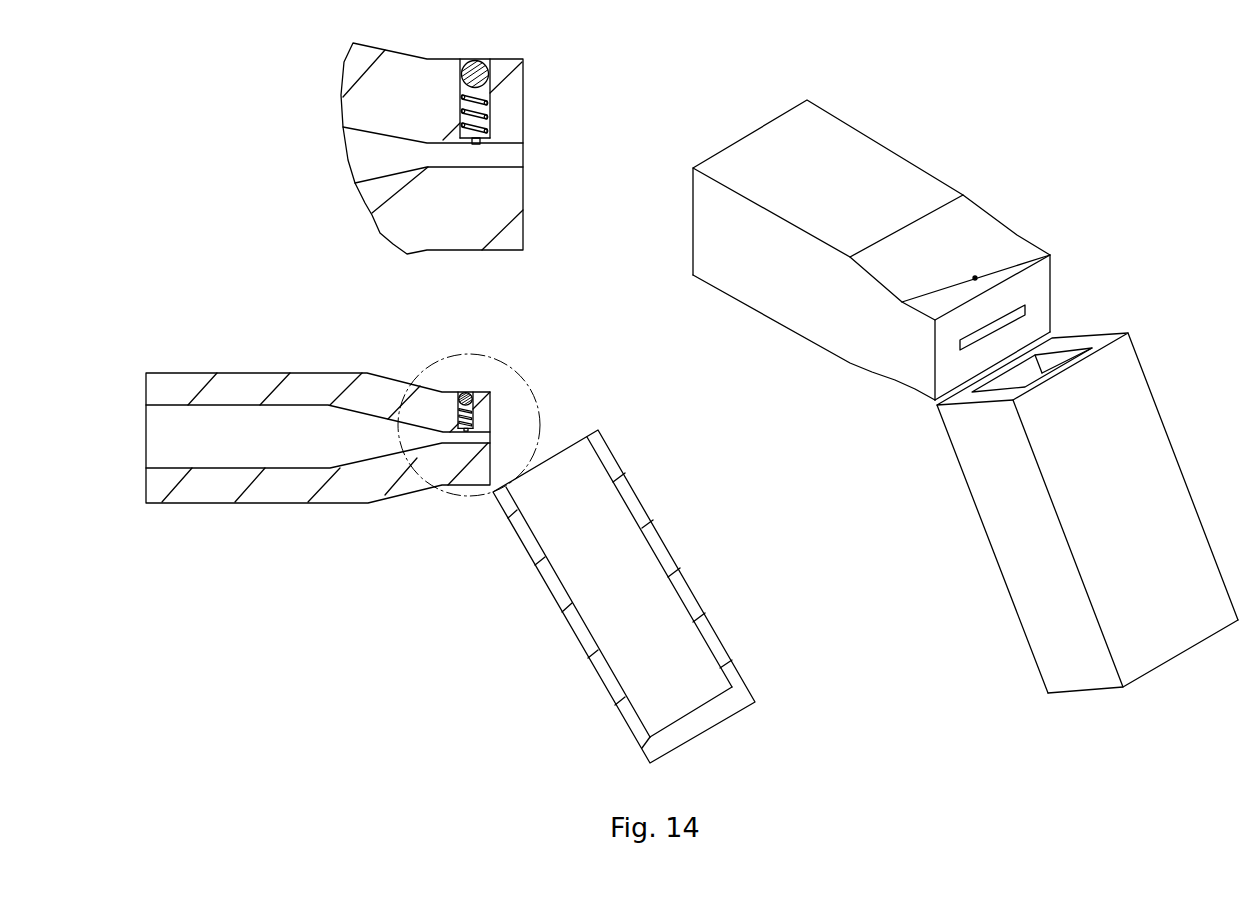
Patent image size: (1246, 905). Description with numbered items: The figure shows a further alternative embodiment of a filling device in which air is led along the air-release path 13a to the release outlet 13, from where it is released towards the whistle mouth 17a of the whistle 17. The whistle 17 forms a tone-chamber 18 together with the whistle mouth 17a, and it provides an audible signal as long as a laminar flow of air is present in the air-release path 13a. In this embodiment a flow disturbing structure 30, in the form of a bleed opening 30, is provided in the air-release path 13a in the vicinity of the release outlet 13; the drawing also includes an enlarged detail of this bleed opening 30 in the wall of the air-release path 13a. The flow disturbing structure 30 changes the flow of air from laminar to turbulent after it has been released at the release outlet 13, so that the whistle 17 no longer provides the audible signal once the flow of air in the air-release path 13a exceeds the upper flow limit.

The release outlet 13 is at (993, 329).
The air-release path 13a is at (240, 450).
The whistle 17 is at (1057, 588).
The whistle mouth 17a is at (1040, 370).
The tone-chamber 18 is at (650, 628).
The flow disturbing structure 30 is at (477, 83).